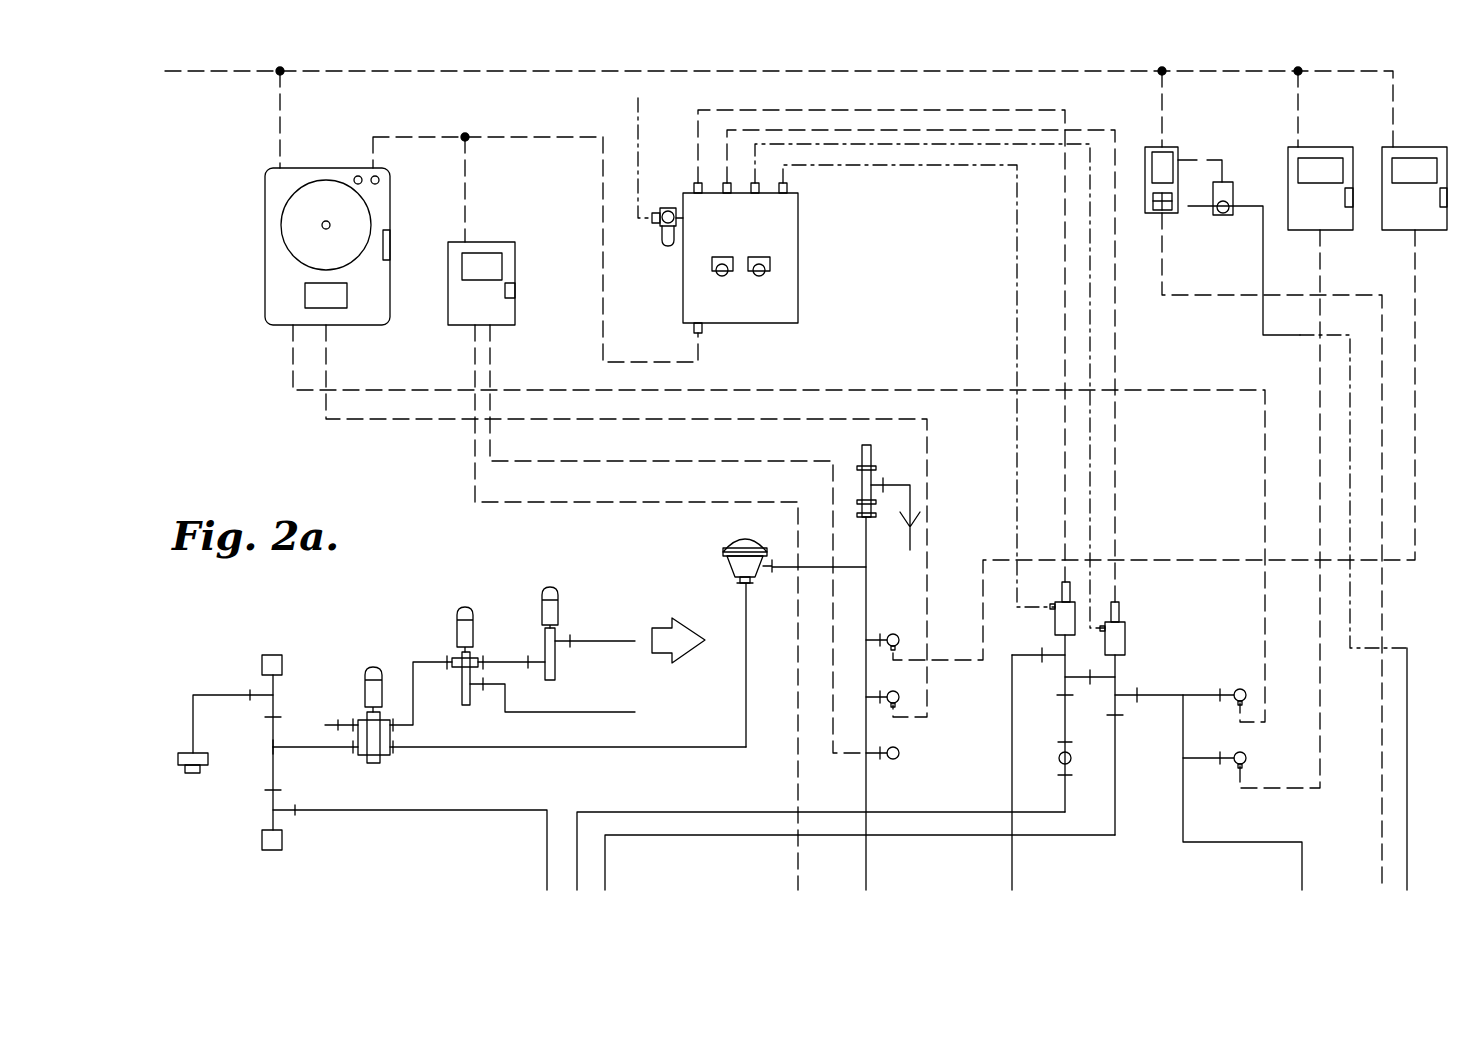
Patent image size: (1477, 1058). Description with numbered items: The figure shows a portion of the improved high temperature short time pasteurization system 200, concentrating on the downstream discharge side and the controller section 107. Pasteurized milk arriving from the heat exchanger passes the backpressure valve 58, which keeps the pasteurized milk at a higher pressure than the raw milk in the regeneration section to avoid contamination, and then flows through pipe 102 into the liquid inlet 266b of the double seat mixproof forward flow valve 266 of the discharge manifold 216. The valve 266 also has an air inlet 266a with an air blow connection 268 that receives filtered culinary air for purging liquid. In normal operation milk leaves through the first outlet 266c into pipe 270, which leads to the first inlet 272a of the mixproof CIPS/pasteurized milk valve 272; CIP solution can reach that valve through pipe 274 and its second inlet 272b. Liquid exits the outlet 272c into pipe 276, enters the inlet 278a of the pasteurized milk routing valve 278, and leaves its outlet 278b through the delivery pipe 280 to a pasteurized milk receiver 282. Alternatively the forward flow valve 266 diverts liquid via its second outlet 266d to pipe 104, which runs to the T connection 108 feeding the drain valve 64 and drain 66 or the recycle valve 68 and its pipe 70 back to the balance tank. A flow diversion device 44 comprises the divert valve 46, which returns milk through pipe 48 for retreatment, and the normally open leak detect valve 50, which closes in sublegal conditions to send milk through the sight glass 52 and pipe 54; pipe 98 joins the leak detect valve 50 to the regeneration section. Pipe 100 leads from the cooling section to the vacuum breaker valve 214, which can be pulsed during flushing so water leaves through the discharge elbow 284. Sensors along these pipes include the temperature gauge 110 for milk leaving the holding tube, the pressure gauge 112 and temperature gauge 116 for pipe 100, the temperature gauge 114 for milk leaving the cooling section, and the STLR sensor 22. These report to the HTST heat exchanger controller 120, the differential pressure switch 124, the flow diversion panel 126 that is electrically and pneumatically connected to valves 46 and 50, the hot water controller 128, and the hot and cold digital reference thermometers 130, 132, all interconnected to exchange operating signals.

The STLR sensor 22 is at (1234, 690).
The flow diversion device 44 is at (1157, 733).
The divert valve 46 is at (1146, 611).
The pipe 48 is at (605, 870).
The leak detect valve 50 is at (1060, 641).
The sight glass 52 is at (1058, 758).
The pipe 54 is at (592, 812).
The backpressure valve 58 is at (722, 548).
The drain valve 64 is at (260, 688).
The drain 66 is at (183, 775).
The recycle valve 68 is at (262, 822).
The pipe 70 is at (405, 812).
The pipe 98 is at (1012, 878).
The pipe 100 is at (867, 866).
The pipe 102 is at (705, 750).
The pipe 104 is at (296, 750).
The controller section 107 is at (1150, 138).
The T connection 108 is at (273, 746).
The temperature gauge 110 is at (1248, 755).
The pressure gauge 112 is at (893, 760).
The temperature gauge 114 is at (888, 634).
The temperature gauge 116 is at (900, 697).
The high temperature short time heat exchanger controller 120 is at (265, 190).
The differential pressure switch 124 is at (513, 243).
The flow diversion panel 126 is at (798, 232).
The hot water controller 128 is at (1178, 148).
The hot temperature digital reference thermometer 130 is at (1325, 232).
The cold temperature digital reference thermometer 132 is at (1410, 147).
The high temperature short time pasteurization system 200 is at (1396, 114).
The vacuum breaker valve 214 is at (873, 472).
The discharge manifold 216 is at (513, 686).
The double seat mixproof forward flow valve 266 is at (367, 765).
The air inlet 266a is at (360, 720).
The liquid inlet 266b is at (380, 760).
The first outlet 266c is at (380, 718).
The second outlet 266d is at (360, 752).
The air blow connection 268 is at (314, 726).
The pipe 270 is at (420, 724).
The CIPS/pasteurized milk valve 272 is at (458, 650).
The first inlet 272a is at (450, 658).
The second inlet 272b is at (475, 692).
The outlet 272c is at (470, 650).
The pipe 274 is at (622, 712).
The pipe 276 is at (503, 657).
The pasteurized milk routing valve 278 is at (553, 633).
The inlet 278a is at (537, 667).
The outlet 278b is at (560, 648).
The delivery pipe 280 is at (622, 640).
The pasteurized milk receiver 282 is at (688, 652).
The discharge elbow 284 is at (893, 484).